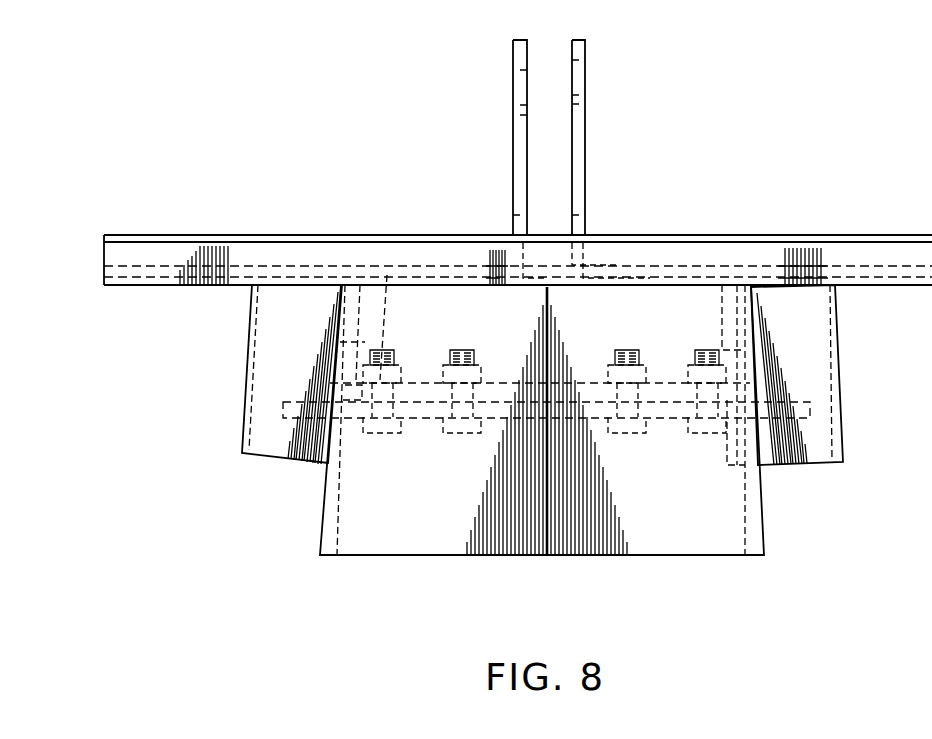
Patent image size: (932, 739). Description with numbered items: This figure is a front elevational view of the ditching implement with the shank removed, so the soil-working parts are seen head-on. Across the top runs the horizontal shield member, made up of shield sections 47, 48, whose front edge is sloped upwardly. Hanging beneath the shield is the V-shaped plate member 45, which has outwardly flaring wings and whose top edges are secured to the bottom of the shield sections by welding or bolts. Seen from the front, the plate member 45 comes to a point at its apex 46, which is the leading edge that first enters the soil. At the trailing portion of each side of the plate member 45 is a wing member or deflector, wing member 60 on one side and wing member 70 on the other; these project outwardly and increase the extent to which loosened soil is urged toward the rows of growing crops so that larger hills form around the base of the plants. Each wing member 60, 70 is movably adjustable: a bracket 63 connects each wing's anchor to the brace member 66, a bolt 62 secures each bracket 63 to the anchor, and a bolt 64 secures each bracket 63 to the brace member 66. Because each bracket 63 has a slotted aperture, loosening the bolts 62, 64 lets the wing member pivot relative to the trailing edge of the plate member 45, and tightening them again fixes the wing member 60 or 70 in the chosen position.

The V-shaped plate member 45 is at (348, 512).
The apex 46 is at (547, 503).
The shield section 47 is at (805, 250).
The shield section 48 is at (258, 249).
The wing member 60 is at (247, 382).
The bolt 62 is at (383, 350).
The bracket 63 is at (653, 385).
The bolt 64 is at (462, 350).
The brace member 66 is at (509, 413).
The wing member 70 is at (820, 358).